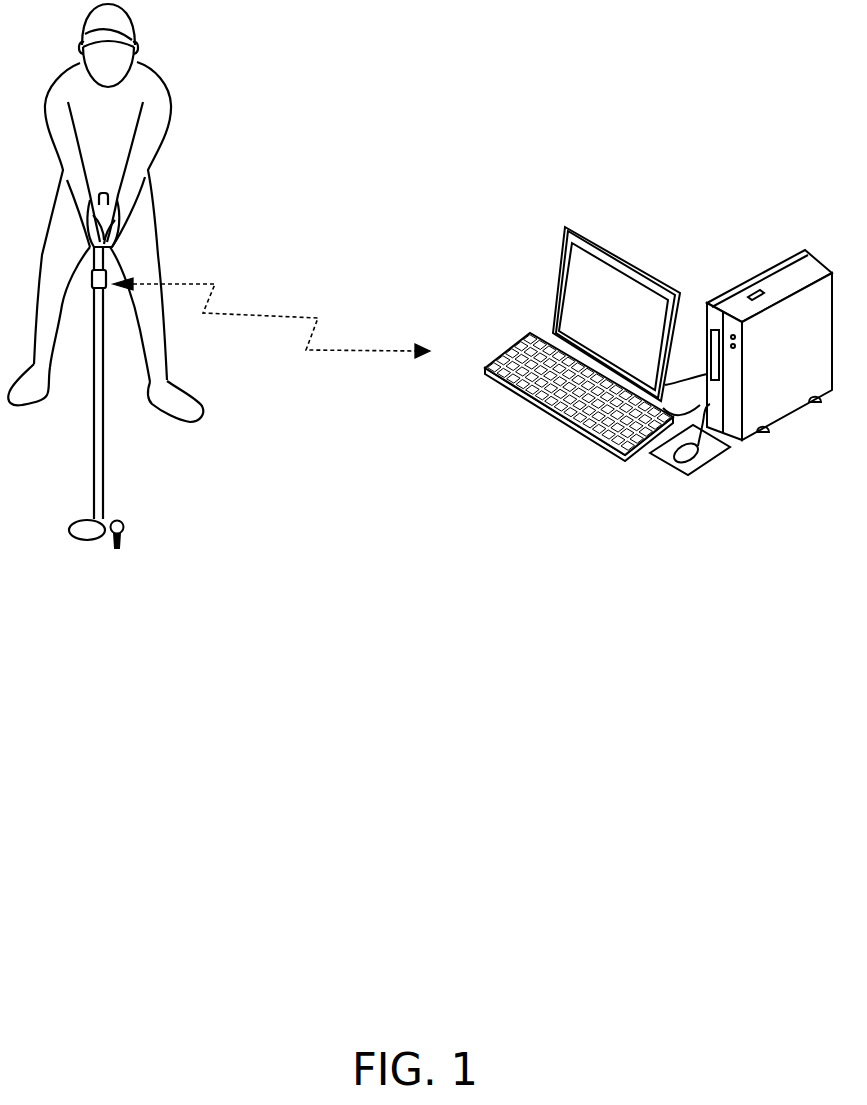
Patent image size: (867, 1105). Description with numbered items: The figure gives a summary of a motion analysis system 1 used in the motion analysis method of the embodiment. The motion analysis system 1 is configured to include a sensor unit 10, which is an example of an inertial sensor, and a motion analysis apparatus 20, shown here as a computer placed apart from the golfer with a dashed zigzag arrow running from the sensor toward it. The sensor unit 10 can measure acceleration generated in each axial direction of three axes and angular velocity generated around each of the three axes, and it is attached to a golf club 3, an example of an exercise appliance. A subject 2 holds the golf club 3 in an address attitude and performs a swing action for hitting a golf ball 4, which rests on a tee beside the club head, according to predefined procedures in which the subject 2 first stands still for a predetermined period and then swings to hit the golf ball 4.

The motion analysis system 1 is at (362, 163).
The subject 2 is at (172, 88).
The golf club 3 is at (103, 450).
The golf ball 4 is at (123, 528).
The sensor unit 10 is at (108, 281).
The motion analysis apparatus 20 is at (618, 278).